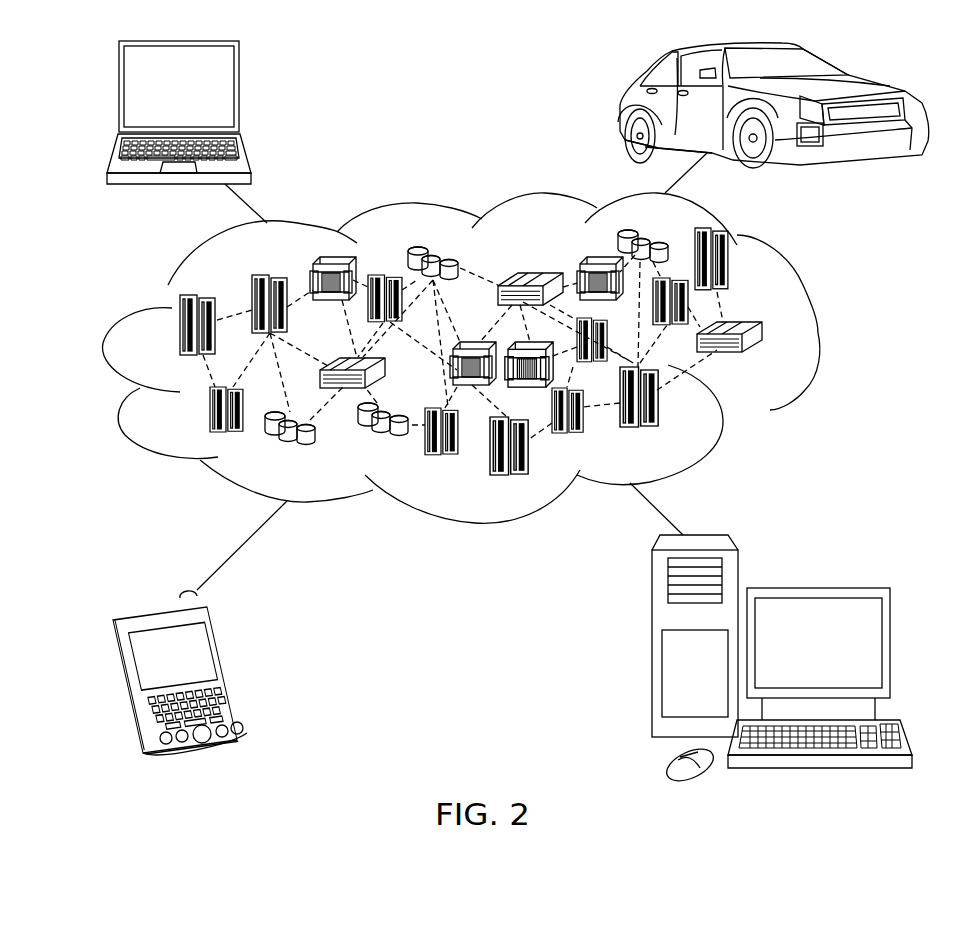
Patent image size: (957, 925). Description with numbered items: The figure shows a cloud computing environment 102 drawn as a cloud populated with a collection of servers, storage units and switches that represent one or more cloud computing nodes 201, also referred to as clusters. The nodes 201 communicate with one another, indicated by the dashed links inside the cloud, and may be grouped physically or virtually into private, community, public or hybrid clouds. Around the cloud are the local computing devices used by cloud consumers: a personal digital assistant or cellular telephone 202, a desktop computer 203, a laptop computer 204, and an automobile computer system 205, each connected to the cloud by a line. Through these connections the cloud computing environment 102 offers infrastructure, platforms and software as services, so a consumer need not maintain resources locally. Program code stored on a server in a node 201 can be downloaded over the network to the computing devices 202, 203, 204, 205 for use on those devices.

The cloud computing environment 102 is at (818, 333).
The cloud computing nodes 201 is at (767, 360).
The personal digital assistant or cellular telephone 202 is at (232, 667).
The desktop computer 203 is at (817, 587).
The laptop computer 204 is at (240, 94).
The automobile computer system 205 is at (623, 107).